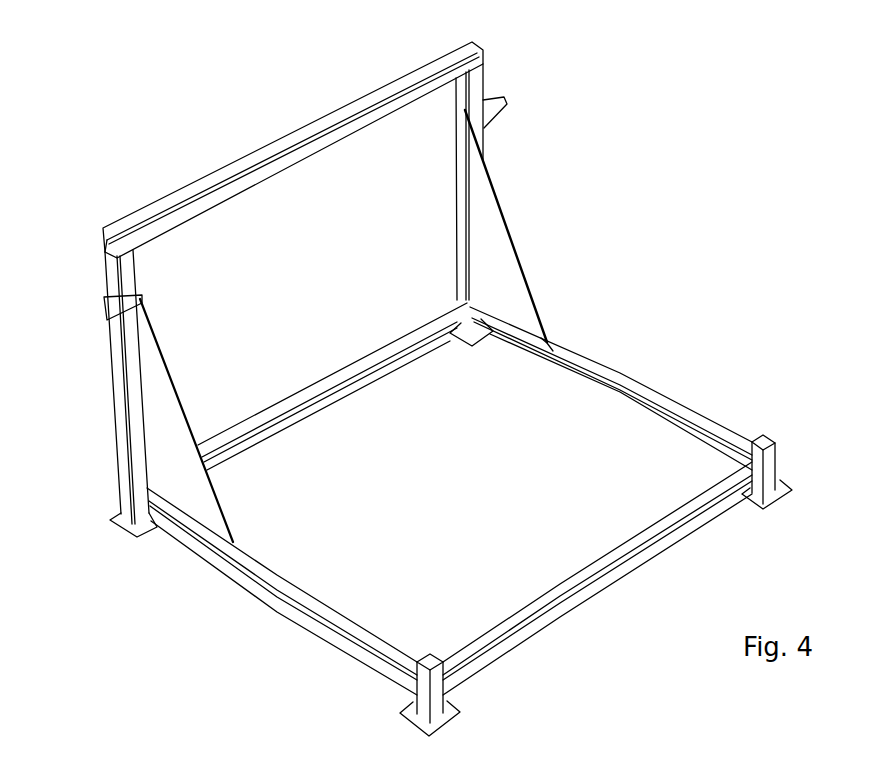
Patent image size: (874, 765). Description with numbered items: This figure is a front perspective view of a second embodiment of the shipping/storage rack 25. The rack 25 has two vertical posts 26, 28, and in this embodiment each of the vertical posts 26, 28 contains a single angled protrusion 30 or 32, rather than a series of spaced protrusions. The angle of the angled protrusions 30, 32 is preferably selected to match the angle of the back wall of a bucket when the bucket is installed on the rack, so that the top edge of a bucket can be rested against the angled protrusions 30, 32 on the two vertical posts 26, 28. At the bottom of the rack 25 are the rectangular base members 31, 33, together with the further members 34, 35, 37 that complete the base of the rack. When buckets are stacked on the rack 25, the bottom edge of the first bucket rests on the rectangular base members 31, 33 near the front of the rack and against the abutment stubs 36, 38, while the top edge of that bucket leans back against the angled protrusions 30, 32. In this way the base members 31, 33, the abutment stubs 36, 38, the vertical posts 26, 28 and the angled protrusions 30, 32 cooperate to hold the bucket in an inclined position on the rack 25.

The shipping/storage rack 25 is at (616, 190).
The vertical post 26 is at (104, 266).
The vertical post 28 is at (488, 82).
The angled protrusion 30 is at (146, 297).
The rectangular base member 31 is at (623, 374).
The angled protrusion 32 is at (507, 100).
The rectangular base member 33 is at (268, 591).
The front right side rail 34 is at (664, 550).
The rear left side rail 35 is at (322, 372).
The abutment stub 36 is at (431, 652).
The rail lower flange 37 is at (575, 609).
The abutment stub 38 is at (772, 434).